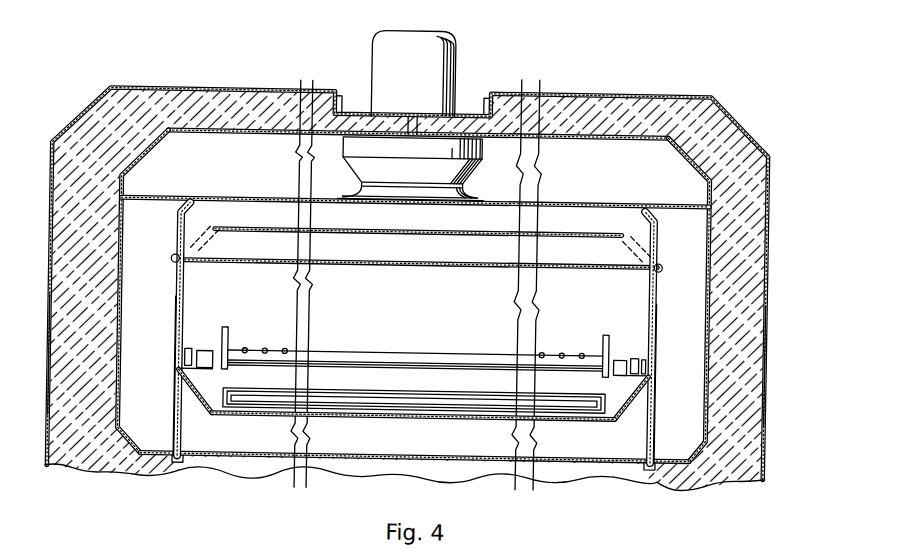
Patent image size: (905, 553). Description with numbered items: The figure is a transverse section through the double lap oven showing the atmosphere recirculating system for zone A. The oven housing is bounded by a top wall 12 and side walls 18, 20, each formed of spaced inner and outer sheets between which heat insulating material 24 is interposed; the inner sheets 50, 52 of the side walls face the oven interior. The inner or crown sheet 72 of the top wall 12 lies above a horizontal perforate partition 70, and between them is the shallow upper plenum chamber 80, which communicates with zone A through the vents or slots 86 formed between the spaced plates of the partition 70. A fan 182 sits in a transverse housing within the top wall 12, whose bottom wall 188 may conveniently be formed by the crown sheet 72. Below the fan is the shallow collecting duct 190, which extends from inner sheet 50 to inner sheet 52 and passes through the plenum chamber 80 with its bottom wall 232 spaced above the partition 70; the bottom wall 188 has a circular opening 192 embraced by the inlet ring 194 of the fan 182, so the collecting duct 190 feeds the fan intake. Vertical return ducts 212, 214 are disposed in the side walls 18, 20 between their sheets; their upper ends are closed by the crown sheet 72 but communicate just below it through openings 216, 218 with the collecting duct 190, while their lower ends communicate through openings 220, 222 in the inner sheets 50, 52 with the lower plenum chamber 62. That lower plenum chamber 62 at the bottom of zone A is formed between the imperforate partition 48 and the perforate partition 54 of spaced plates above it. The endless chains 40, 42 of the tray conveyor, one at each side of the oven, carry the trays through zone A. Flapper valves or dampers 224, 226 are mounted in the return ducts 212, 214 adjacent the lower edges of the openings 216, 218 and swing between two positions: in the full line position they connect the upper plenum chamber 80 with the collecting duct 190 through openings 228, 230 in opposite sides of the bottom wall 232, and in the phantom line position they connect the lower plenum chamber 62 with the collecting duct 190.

The top wall 12 is at (407, 268).
The side wall 18 is at (47, 344).
The side wall 20 is at (768, 316).
The heat insulating material 24 is at (65, 299).
The crown sheet 72 is at (212, 200).
The fan 182 is at (426, 182).
The inlet ring 194 is at (460, 191).
The collecting duct 190 is at (340, 224).
The circular opening 192 is at (442, 200).
The bottom wall 188 is at (506, 200).
The plenum chamber 80 is at (420, 275).
The bottom wall 232 is at (462, 236).
The vents or slots 86 is at (392, 258).
The horizontal perforate partition 70 is at (443, 269).
The damper 224 is at (172, 234).
The damper 226 is at (659, 236).
The opening 216 is at (184, 353).
The opening 218 is at (640, 364).
The opening 228 is at (209, 240).
The opening 230 is at (631, 237).
The return duct 212 is at (134, 317).
The return duct 214 is at (661, 319).
The endless chain 40 is at (190, 352).
The endless chain 42 is at (635, 351).
The zone A is at (397, 342).
The opening 220 is at (184, 432).
The opening 222 is at (647, 433).
The plenum chamber 62 is at (389, 448).
The horizontal perforate partition 54 is at (449, 416).
The horizontal imperforate partition 48 is at (430, 460).
The inner sheet 50 is at (178, 466).
The inner sheet 52 is at (648, 468).